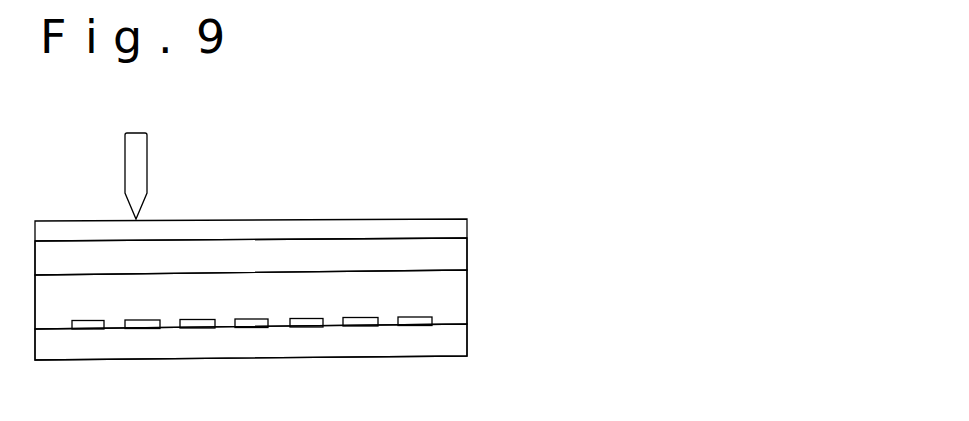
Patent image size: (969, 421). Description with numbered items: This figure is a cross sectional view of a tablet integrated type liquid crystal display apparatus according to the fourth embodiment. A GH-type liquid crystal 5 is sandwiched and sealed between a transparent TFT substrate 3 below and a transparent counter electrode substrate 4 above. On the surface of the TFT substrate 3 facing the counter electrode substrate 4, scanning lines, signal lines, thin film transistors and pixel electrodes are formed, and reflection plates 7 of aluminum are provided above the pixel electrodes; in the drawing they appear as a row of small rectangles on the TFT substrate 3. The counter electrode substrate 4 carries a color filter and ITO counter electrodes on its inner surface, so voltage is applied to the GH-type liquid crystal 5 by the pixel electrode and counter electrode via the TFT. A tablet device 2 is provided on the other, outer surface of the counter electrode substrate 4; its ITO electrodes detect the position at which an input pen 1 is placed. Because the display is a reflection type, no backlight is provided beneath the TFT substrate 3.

The input pen 1 is at (147, 168).
The tablet device 2 is at (380, 219).
The TFT substrate 3 is at (467, 349).
The counter electrode substrate 4 is at (467, 255).
The GH-type liquid crystal 5 is at (467, 303).
The reflection plate 7 is at (413, 329).